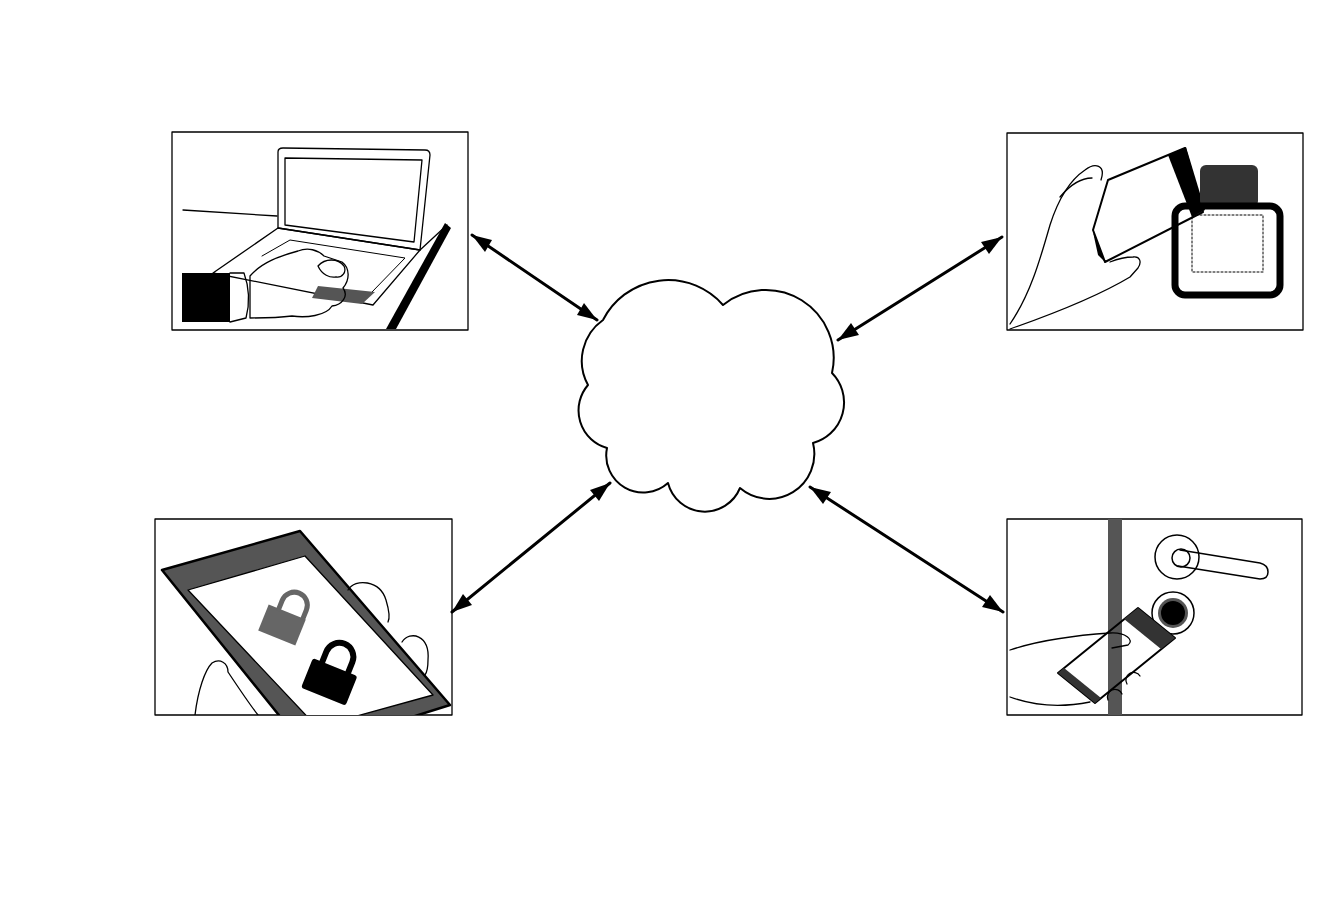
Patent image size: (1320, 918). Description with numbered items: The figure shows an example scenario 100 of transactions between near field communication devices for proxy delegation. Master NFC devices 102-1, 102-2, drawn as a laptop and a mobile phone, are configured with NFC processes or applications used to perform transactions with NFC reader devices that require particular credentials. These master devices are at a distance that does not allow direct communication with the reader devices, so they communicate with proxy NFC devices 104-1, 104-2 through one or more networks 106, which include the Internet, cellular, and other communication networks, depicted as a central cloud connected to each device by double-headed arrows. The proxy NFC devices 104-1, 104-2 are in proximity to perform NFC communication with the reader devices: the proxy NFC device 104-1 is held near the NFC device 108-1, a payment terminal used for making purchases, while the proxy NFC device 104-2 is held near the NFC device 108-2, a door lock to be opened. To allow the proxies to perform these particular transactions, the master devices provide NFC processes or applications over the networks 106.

The scenario 100 is at (252, 57).
The master NFC device 102-1 is at (295, 183).
The master NFC device 102-2 is at (317, 563).
The proxy NFC device 104-1 is at (1157, 183).
The proxy NFC device 104-2 is at (1126, 634).
The networks 106 is at (730, 420).
The NFC device 108-1 is at (1205, 280).
The NFC device 108-2 is at (1193, 619).